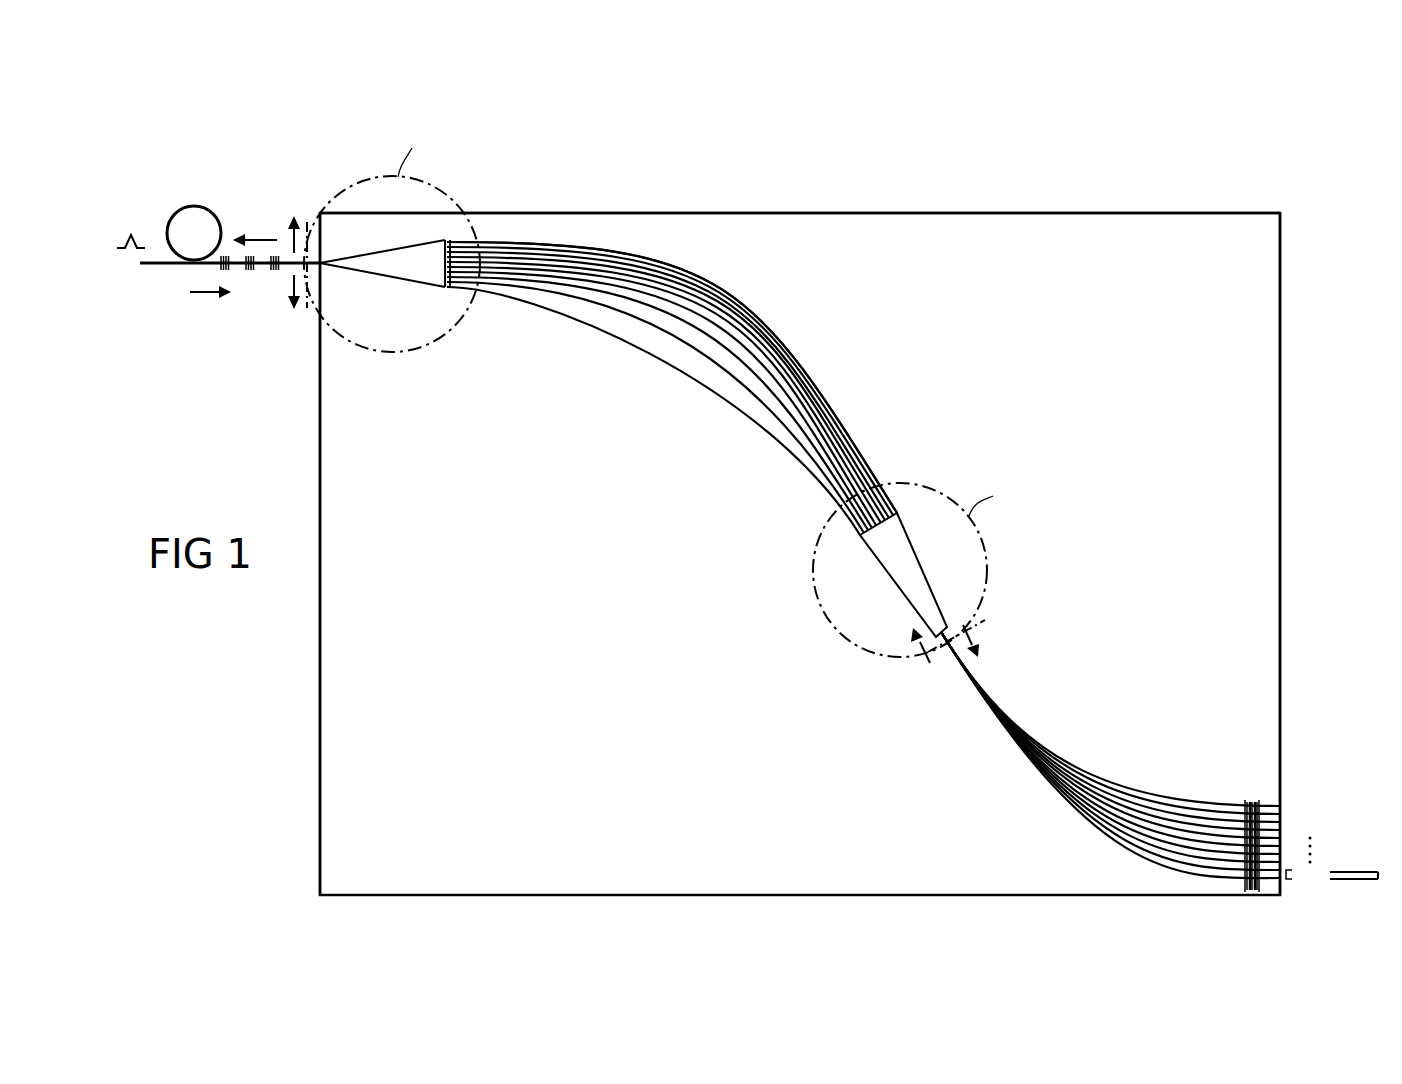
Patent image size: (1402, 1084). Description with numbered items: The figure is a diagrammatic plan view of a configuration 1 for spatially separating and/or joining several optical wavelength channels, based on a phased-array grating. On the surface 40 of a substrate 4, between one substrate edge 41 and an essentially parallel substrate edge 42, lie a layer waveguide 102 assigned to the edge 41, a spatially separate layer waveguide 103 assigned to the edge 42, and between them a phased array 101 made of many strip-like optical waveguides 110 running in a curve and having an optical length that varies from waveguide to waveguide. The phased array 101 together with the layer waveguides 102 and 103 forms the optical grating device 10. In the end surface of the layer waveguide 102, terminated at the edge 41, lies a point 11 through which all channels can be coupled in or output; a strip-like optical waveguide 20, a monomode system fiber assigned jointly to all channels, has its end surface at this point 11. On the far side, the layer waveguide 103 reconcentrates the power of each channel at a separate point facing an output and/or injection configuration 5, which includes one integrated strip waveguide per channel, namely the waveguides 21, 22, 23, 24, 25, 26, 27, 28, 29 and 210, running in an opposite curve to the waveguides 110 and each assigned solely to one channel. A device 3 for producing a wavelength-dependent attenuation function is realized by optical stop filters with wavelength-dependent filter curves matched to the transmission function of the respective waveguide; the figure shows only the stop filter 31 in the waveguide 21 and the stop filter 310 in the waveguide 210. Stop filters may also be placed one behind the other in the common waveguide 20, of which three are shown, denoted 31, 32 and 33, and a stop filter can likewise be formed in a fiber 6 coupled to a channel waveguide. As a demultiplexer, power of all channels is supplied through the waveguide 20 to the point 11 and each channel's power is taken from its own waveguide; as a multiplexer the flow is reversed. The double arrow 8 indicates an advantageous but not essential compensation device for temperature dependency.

The configuration 1 is at (762, 194).
The device for producing an attenuation function 3 is at (1270, 801).
The substrate 4 is at (1060, 212).
The output and/or injection configuration 5 is at (1110, 784).
The fiber 6 is at (1358, 880).
The double arrow 8 is at (305, 308).
The optical grating device 10 is at (672, 388).
The point 11 is at (324, 266).
The strip-like optical waveguide 20 is at (176, 214).
The strip-like optical waveguide 21 is at (1102, 835).
The strip-like optical waveguide 22 is at (1130, 848).
The strip-like optical waveguide 23 is at (1168, 855).
The strip-like optical waveguide 24 is at (1207, 862).
The strip-like optical waveguide 25 is at (1228, 830).
The strip-like optical waveguide 26 is at (1196, 827).
The strip-like optical waveguide 27 is at (1165, 815).
The strip-like optical waveguide 28 is at (1110, 795).
The strip-like optical waveguide 29 is at (1080, 778).
The strip-like optical waveguide 210 is at (1046, 750).
The stop filter 31 is at (221, 268).
The stop filter 32 is at (227, 256).
The stop filter 33 is at (277, 256).
The surface 40 is at (954, 240).
The substrate edge 41 is at (318, 437).
The substrate edge 42 is at (1282, 326).
The phased array 101 is at (674, 256).
The layer waveguide 102 is at (388, 275).
The layer waveguide 103 is at (888, 560).
The strip-like optical waveguides 110 is at (627, 333).
The stop filter 310 is at (1252, 800).